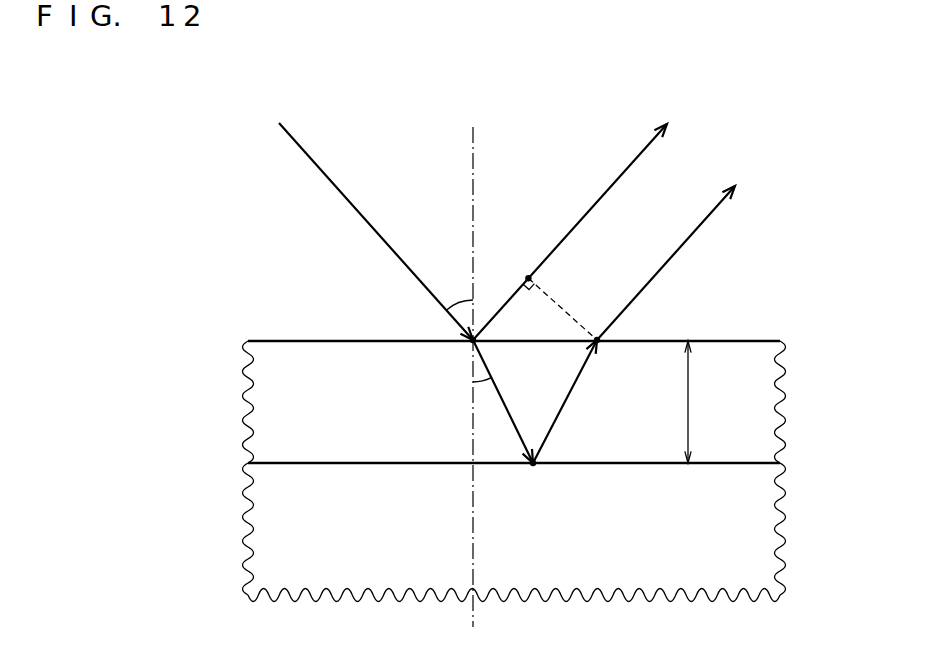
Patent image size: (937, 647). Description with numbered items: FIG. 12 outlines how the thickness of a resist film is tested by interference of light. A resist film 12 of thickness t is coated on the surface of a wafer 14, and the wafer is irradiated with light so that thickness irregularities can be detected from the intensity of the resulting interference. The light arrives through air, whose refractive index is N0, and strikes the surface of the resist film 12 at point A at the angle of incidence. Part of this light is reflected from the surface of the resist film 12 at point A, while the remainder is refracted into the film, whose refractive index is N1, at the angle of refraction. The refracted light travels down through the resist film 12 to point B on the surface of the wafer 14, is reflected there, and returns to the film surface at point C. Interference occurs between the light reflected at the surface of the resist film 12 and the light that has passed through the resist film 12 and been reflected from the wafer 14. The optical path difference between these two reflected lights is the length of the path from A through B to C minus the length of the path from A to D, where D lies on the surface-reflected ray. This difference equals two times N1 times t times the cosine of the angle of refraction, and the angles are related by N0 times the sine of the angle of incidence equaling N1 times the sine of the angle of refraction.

The resist film 12 is at (762, 414).
The wafer 14 is at (762, 536).
The refractive index of air N0 is at (376, 231).
The refractive index of the resist film N1 is at (449, 401).
The point A is at (557, 248).
The point B is at (531, 477).
The point C is at (664, 276).
The point D is at (550, 299).
The thickness of the resist film t is at (693, 402).